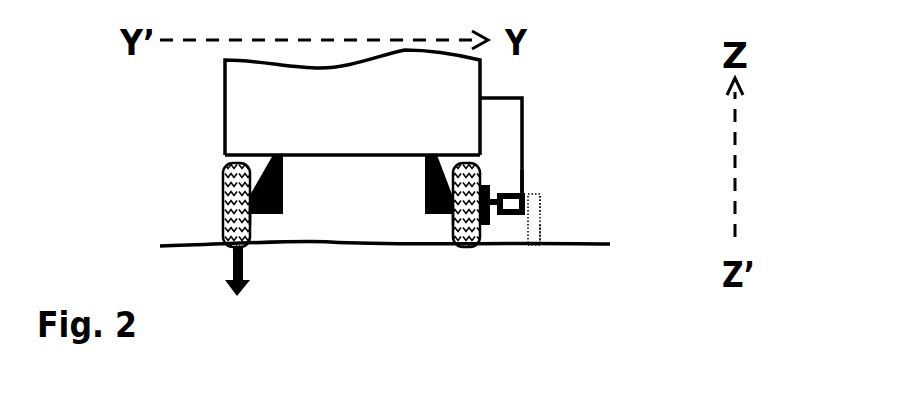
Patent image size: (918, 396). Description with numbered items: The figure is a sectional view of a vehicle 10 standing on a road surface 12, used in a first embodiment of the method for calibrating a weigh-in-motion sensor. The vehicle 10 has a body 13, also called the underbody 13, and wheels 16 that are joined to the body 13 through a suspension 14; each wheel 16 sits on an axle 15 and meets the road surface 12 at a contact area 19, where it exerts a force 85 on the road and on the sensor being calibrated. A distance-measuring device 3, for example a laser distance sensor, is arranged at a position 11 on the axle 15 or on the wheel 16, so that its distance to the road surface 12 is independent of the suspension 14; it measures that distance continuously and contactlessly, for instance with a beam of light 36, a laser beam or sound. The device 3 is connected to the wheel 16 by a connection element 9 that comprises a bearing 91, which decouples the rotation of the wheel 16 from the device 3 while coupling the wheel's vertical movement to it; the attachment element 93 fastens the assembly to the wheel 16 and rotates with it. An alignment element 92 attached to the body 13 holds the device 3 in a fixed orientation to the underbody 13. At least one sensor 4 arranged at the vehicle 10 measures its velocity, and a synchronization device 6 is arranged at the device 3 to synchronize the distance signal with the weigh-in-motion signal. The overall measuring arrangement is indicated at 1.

The autonomous vehicle 1 is at (179, 206).
The device 3 is at (612, 204).
The sensor 4 is at (612, 204).
The synchronization device 6 is at (540, 200).
The connection element 9 is at (515, 236).
The vehicle 10 is at (546, 52).
The position 11 is at (551, 205).
The road surface 12 is at (165, 246).
The body 13 is at (360, 157).
The suspension 14 is at (283, 188).
The axle 15 is at (256, 212).
The wheel 16 is at (237, 200).
The contact area 19 is at (486, 244).
The beam of light 36 is at (547, 232).
The force 85 is at (216, 284).
The bearing 91 is at (517, 192).
The alignment element 92 is at (524, 116).
The attachment element 93 is at (489, 232).